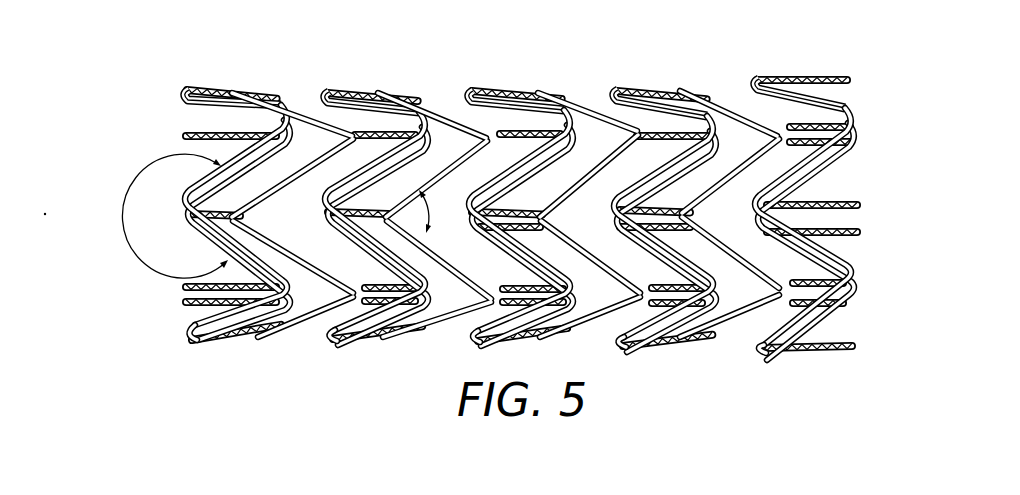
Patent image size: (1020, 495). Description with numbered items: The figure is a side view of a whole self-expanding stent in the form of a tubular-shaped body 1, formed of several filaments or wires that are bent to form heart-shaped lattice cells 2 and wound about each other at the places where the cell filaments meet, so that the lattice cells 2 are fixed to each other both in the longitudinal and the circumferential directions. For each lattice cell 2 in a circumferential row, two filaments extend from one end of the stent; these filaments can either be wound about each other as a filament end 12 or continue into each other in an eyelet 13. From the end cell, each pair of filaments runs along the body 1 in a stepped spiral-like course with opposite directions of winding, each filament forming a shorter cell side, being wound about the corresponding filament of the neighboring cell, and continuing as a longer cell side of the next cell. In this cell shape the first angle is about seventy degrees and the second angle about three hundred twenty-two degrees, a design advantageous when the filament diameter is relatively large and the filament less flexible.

The tubular-shaped body 1 is at (488, 189).
The lattice cells 2 is at (441, 135).
The filament end 12 is at (836, 197).
The eyelet 13 is at (178, 321).